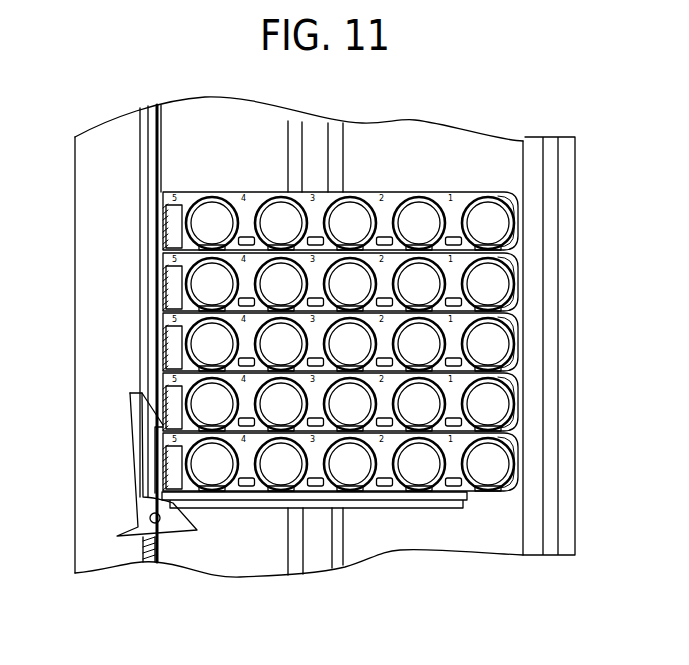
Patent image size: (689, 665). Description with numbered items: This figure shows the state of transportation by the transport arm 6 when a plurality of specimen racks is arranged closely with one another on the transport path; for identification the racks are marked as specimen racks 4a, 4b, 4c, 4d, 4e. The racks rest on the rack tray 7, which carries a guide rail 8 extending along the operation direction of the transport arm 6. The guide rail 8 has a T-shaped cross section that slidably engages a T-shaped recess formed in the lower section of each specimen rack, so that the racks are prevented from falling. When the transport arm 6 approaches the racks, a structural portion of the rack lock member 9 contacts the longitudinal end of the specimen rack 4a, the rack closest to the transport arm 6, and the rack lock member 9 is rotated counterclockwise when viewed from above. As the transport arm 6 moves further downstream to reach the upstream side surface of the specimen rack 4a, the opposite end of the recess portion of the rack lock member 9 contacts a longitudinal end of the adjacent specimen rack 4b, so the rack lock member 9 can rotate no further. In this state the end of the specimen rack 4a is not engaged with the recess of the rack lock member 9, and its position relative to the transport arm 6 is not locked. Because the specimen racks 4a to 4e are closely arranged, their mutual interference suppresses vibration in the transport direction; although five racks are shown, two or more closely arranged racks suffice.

The specimen rack 4a is at (513, 446).
The specimen rack 4b is at (513, 386).
The specimen rack 4c is at (513, 326).
The specimen rack 4d is at (513, 266).
The specimen rack 4e is at (513, 205).
The transport arm 6 is at (384, 503).
The rack tray 7 is at (448, 143).
The guide rail 8 is at (318, 138).
The rack lock member 9 is at (140, 463).